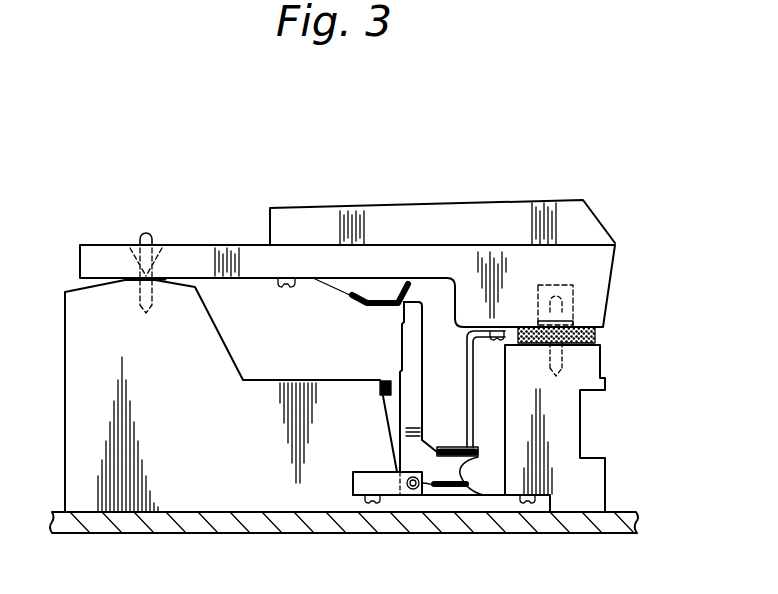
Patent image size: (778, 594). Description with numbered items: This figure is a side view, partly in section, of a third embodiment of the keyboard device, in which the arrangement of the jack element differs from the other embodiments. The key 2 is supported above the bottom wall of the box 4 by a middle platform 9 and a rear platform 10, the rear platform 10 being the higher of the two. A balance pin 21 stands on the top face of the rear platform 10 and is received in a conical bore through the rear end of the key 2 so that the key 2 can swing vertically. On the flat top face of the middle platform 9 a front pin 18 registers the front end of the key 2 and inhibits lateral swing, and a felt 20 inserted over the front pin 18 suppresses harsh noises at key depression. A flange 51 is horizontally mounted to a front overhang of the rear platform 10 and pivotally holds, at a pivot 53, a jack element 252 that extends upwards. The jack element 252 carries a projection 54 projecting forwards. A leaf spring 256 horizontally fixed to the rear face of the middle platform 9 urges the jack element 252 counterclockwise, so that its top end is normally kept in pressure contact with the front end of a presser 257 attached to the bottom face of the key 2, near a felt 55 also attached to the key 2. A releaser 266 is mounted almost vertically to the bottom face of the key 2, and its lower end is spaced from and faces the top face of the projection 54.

The key 2 is at (600, 254).
The box 4 is at (222, 534).
The middle platform 9 is at (596, 475).
The rear platform 10 is at (68, 393).
The front pin 18 is at (575, 303).
The felt 20 is at (585, 338).
The balance pin 21 is at (150, 233).
The flange 51 is at (383, 496).
The pivot 53 is at (413, 497).
The projection 54 is at (455, 489).
The felt 55 is at (385, 380).
The jack element 252 is at (393, 448).
The leaf spring 256 is at (494, 497).
The presser 257 is at (334, 280).
The releaser 266 is at (474, 412).